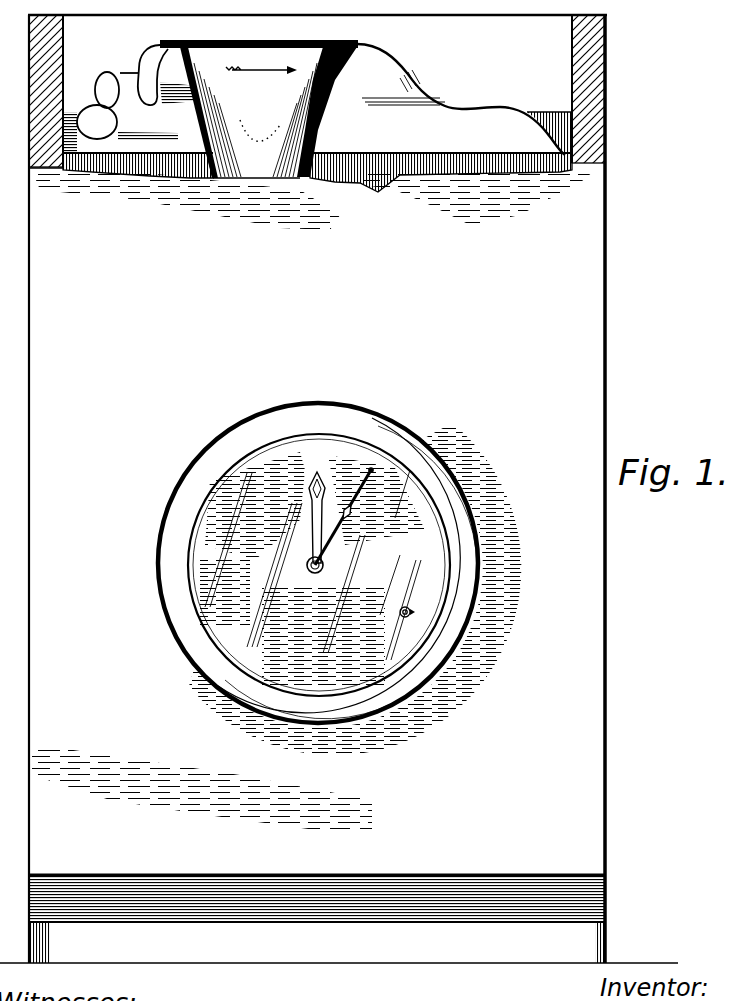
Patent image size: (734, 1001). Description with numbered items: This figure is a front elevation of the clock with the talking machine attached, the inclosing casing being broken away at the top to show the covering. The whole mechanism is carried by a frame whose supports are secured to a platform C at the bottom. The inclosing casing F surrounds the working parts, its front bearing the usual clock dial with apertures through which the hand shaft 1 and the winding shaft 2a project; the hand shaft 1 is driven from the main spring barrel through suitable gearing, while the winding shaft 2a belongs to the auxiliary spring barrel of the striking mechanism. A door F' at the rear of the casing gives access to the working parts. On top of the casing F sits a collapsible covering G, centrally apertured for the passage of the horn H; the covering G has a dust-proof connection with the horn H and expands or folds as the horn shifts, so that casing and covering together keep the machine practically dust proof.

The horn H is at (259, 109).
The covering G is at (104, 78).
The door F' is at (507, 47).
The inclosing casing F is at (339, 579).
The hand shaft 1 is at (320, 572).
The winding shaft 2a is at (226, 606).
The platform C is at (317, 919).